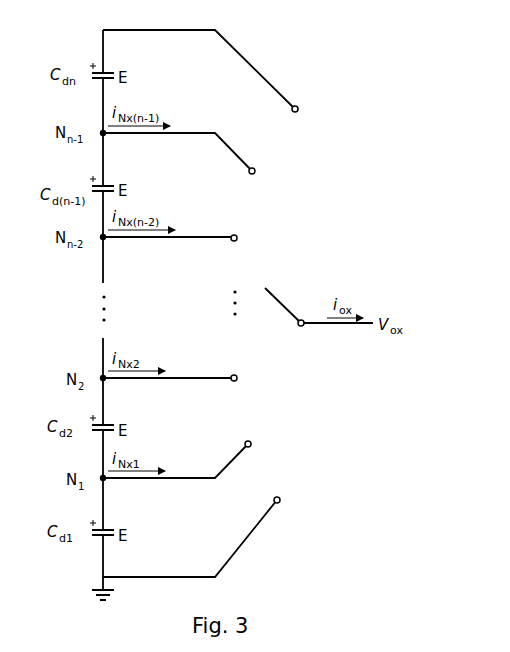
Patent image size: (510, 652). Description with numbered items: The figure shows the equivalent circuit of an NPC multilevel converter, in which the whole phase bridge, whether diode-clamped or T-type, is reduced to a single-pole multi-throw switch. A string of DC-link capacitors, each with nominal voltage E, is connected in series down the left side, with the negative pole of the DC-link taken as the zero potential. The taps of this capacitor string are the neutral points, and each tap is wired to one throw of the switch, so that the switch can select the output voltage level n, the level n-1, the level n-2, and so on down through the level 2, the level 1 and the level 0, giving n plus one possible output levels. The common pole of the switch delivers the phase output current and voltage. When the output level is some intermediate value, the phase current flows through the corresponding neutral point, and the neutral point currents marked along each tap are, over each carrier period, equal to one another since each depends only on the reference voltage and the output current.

The output voltage level n is at (212, 79).
The output voltage level n-1 is at (197, 157).
The output voltage level n-2 is at (190, 241).
The output voltage level 2 is at (183, 380).
The output voltage level 1 is at (190, 457).
The output voltage level 0 is at (205, 535).